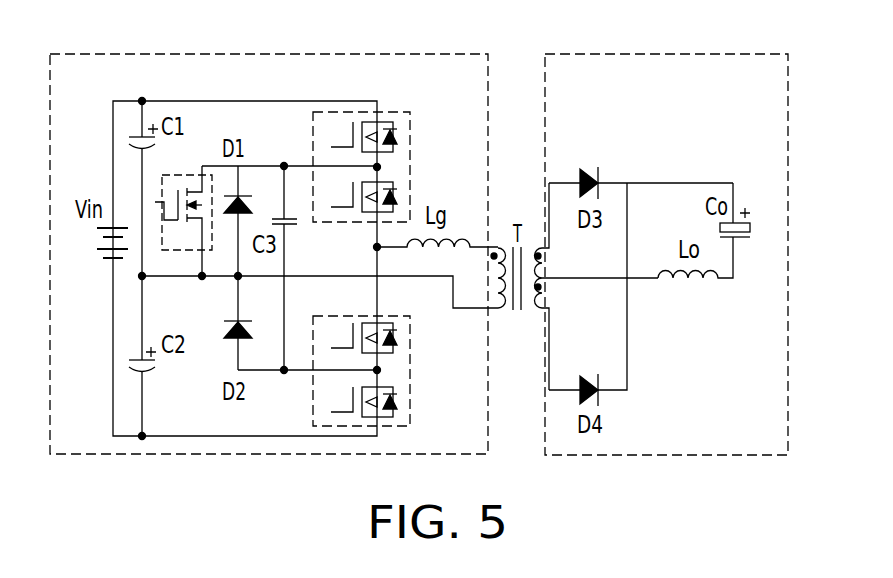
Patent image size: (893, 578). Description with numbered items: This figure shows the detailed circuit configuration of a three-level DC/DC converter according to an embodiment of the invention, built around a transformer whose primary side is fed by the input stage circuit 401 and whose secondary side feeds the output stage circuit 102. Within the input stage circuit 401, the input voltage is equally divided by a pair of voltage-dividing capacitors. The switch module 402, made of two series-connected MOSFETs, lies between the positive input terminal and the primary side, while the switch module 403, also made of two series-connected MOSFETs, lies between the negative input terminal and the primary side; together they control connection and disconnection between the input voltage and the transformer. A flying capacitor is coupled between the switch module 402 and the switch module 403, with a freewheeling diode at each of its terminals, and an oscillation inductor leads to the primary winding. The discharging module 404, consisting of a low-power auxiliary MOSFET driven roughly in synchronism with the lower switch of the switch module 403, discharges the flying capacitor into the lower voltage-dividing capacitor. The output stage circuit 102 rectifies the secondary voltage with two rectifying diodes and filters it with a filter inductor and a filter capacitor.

The input stage circuit 401 is at (235, 55).
The output stage circuit 102 is at (580, 55).
The switch module 402 is at (413, 133).
The switch module 403 is at (413, 338).
The discharging module 404 is at (155, 200).